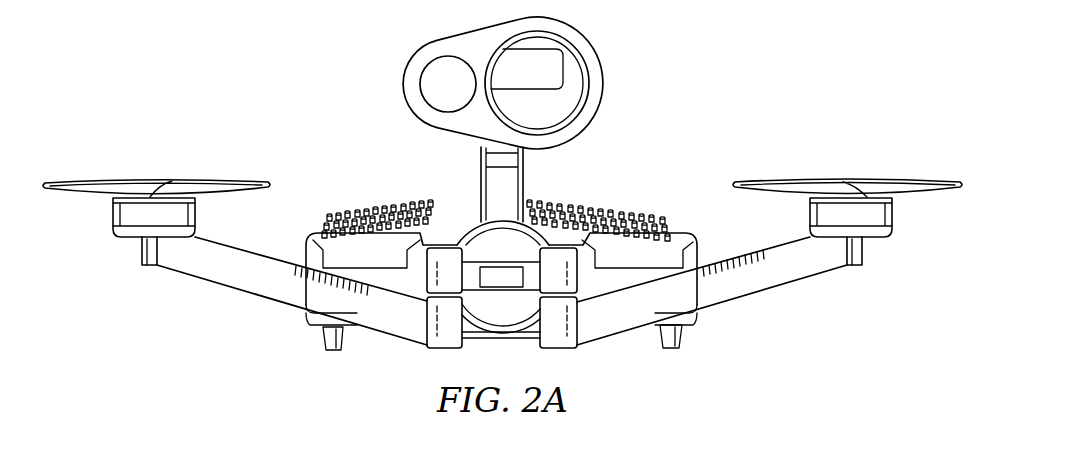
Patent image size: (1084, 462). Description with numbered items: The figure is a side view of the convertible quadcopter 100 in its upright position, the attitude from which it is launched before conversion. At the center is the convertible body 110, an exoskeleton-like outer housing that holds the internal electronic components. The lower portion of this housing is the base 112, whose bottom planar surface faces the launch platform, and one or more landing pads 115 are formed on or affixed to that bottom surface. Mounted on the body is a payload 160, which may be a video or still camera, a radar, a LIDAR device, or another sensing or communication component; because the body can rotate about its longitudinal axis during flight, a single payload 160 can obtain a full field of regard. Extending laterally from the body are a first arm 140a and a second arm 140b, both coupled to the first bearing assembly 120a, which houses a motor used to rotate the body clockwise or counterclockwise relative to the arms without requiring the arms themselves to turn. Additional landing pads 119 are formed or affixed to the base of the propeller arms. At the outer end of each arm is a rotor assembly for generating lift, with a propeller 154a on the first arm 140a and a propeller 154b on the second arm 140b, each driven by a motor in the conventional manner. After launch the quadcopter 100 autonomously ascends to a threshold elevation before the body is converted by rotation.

The quadcopter 100 is at (718, 90).
The convertible body 110 is at (663, 212).
The base 112 is at (617, 279).
The landing pad 115 is at (324, 338).
The landing pad 119 is at (442, 349).
The first bearing assembly 120a is at (507, 240).
The first arm 140a is at (765, 271).
The second arm 140b is at (236, 272).
The propeller 154a is at (878, 183).
The propeller 154b is at (128, 183).
The payload 160 is at (570, 40).